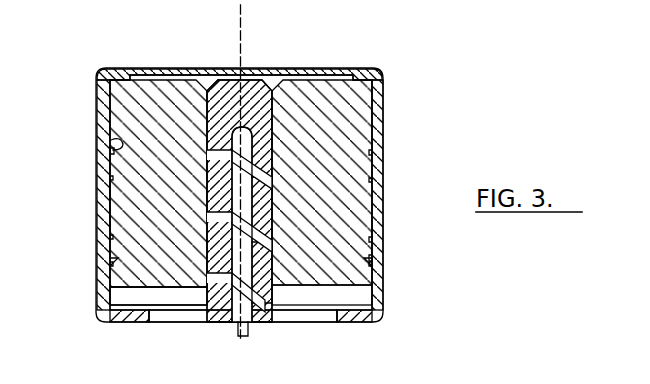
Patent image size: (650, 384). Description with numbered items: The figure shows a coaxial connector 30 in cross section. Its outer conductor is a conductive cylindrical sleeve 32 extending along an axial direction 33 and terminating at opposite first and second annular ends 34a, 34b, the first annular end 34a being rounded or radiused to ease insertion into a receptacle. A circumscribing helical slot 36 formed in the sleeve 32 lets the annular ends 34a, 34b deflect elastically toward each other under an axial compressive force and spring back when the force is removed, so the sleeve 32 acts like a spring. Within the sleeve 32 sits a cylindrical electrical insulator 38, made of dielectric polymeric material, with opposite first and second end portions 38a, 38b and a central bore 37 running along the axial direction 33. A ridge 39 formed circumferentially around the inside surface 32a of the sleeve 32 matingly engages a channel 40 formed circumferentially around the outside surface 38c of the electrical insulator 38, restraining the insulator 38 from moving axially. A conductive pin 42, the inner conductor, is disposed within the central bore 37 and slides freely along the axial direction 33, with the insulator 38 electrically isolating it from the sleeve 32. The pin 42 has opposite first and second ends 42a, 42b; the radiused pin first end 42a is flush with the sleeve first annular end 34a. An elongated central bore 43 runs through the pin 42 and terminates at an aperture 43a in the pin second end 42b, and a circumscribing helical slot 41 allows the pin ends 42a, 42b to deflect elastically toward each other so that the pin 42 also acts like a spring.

The coaxial connector 30 is at (436, 94).
The conductive cylindrical sleeve 32 is at (377, 178).
The inside surface 32a is at (110, 153).
The axial direction 33 is at (242, 33).
The first annular end 34a is at (358, 72).
The second annular end 34b is at (346, 317).
The helical slot 36 is at (380, 259).
The central bore 37 is at (197, 315).
The electrical insulator 38 is at (310, 108).
The first end portion 38a is at (160, 85).
The second end portion 38b is at (127, 250).
The outside surface 38c is at (108, 196).
The ridge 39 is at (108, 262).
The channel 40 is at (106, 282).
The helical slot 41 is at (273, 240).
The conductive pin 42 is at (253, 107).
The pin first end 42a is at (217, 88).
The pin second end 42b is at (222, 323).
The elongated central bore 43 is at (250, 300).
The aperture 43a is at (246, 332).